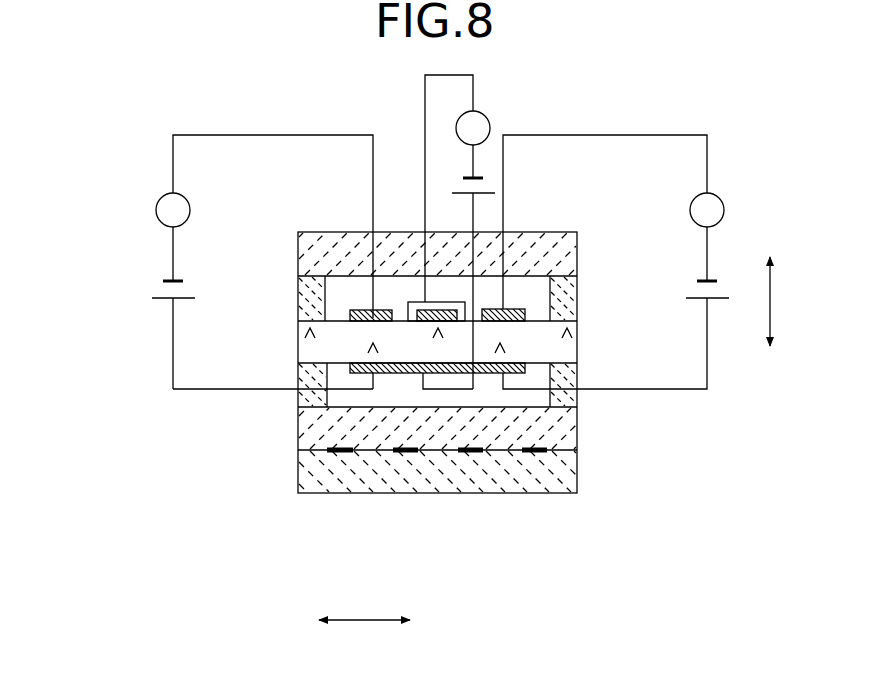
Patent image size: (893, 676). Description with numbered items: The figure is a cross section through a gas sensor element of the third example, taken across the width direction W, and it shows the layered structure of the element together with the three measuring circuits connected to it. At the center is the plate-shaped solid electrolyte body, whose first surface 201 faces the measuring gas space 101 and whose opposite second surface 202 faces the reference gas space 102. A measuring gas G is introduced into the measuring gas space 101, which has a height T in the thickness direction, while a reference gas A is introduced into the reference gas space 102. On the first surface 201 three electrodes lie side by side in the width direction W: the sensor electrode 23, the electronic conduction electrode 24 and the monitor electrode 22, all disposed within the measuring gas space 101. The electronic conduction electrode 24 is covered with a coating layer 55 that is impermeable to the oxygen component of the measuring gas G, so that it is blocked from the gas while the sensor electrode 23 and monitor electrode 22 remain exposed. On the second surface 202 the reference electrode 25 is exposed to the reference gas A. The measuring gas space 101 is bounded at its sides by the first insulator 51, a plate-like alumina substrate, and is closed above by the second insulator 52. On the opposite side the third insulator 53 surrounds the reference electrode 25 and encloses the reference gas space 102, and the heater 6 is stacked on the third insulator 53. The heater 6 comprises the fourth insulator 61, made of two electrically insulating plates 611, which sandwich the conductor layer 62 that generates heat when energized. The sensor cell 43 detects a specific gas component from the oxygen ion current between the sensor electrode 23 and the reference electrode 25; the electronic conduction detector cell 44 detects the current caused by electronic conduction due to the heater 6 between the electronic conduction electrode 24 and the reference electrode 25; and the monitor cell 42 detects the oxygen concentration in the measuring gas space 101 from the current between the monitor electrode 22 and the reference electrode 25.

The heater 6 is at (325, 505).
The second insulator 52 is at (316, 253).
The first insulator 51 is at (312, 293).
The measuring gas space 101 is at (515, 292).
The first surface 201 is at (350, 316).
The second surface 202 is at (327, 363).
The sensor electrode 23 is at (362, 312).
The electronic conduction electrode 24 is at (423, 302).
The coating layer 55 is at (447, 302).
The monitor electrode 22 is at (525, 315).
The measuring gas G is at (343, 293).
The reference electrode 25 is at (410, 373).
The third insulator 53 is at (303, 400).
The reference gas space 102 is at (530, 397).
The reference gas A is at (387, 392).
The fourth insulator 61 is at (534, 472).
The electrically insulating plates 611 is at (565, 430).
The conductor layer 62 is at (543, 452).
The sensor cell 43 is at (150, 183).
The electronic conduction detector cell 44 is at (490, 103).
The monitor cell 42 is at (730, 182).
The width direction W is at (364, 605).
The height T is at (782, 301).